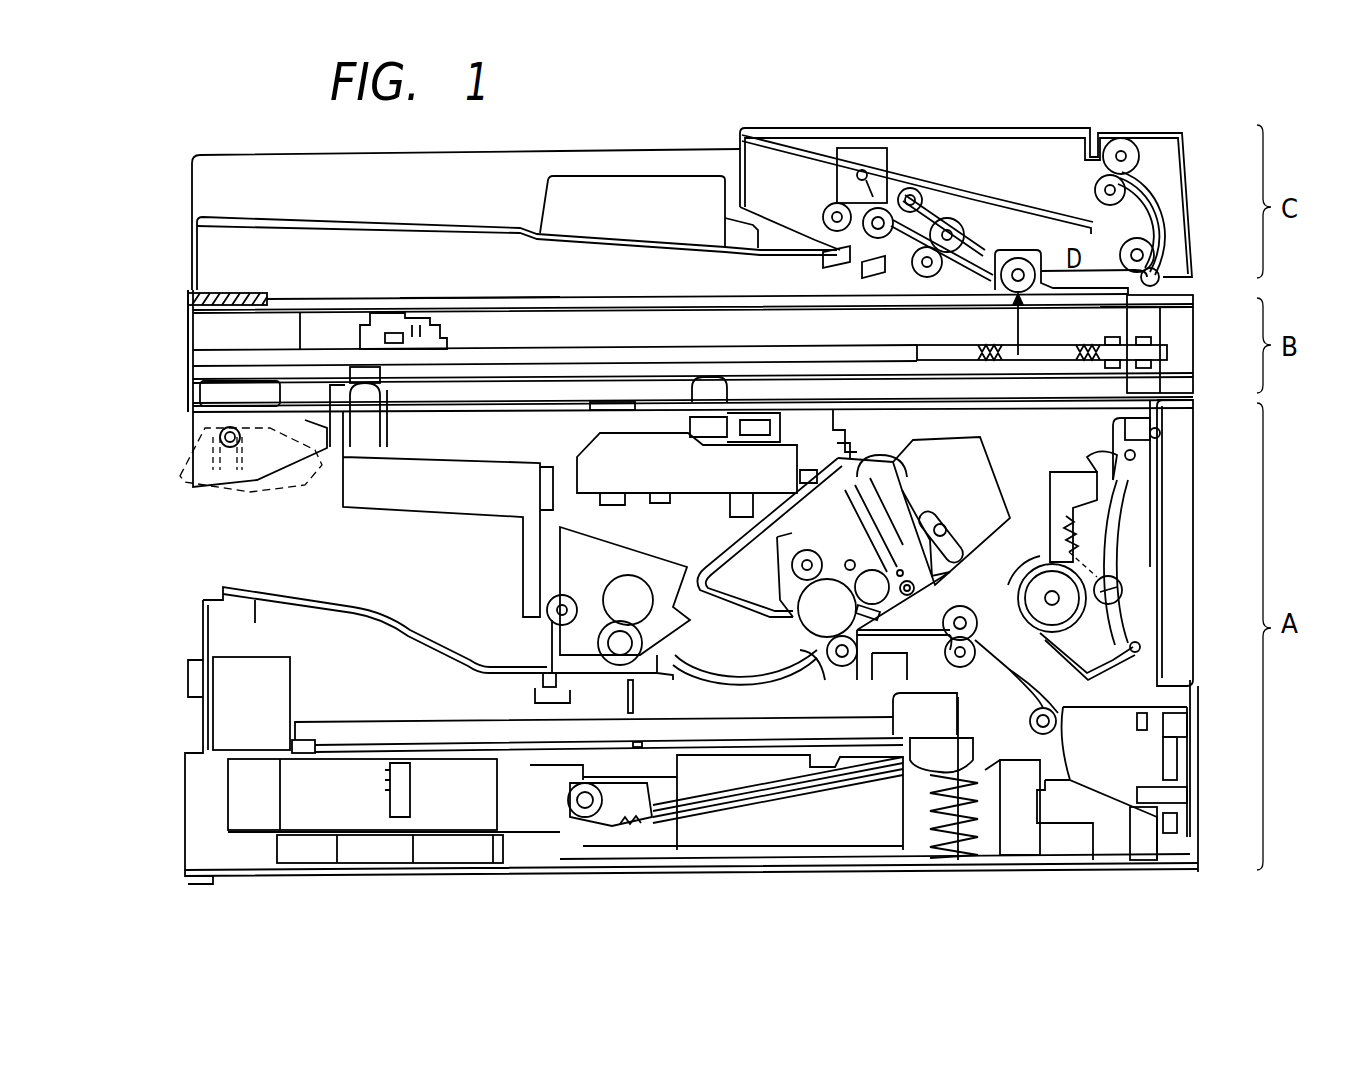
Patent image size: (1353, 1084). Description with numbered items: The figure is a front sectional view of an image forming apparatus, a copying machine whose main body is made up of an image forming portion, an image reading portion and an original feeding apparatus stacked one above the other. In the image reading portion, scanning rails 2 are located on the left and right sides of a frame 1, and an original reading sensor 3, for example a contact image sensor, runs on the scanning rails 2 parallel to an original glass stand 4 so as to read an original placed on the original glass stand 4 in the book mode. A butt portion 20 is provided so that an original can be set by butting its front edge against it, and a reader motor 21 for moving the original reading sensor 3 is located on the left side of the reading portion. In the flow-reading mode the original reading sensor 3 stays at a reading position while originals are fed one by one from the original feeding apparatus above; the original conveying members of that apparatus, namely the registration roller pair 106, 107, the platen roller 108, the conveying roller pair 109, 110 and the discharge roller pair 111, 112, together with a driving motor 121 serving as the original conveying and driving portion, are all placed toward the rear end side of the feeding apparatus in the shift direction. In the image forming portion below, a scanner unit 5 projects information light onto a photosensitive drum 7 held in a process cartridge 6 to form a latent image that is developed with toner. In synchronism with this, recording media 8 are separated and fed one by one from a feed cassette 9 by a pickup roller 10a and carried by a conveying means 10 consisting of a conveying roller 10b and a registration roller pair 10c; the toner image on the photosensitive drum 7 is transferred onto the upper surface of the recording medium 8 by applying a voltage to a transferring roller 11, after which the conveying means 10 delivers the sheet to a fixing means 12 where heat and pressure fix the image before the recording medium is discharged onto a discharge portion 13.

The frame 1 is at (186, 330).
The scanning rails 2 is at (312, 350).
The original reading sensor 3 is at (393, 313).
The original glass stand 4 is at (477, 300).
The scanner unit 5 is at (655, 440).
The process cartridge 6 is at (877, 453).
The photosensitive drum 7 is at (805, 600).
The recording media 8 is at (713, 795).
The feed cassette 9 is at (832, 800).
The conveying means 10 is at (1150, 912).
The pickup roller 10a is at (957, 757).
The conveying roller 10b is at (1043, 735).
The registration roller pair 10c is at (1065, 710).
The transferring roller 11 is at (843, 660).
The fixing means 12 is at (592, 653).
The discharge portion 13 is at (463, 617).
The butt portion 20 is at (232, 287).
The reader motor 21 is at (243, 393).
The registration roller pair 106 is at (925, 278).
The registration roller pair 107 is at (948, 217).
The platen roller 108 is at (1016, 262).
The conveying roller pair 109 is at (1132, 243).
The conveying roller pair 110 is at (1158, 275).
The discharge roller pair 111 is at (1120, 187).
The discharge roller pair 112 is at (1120, 142).
The driving motor 121 is at (876, 157).